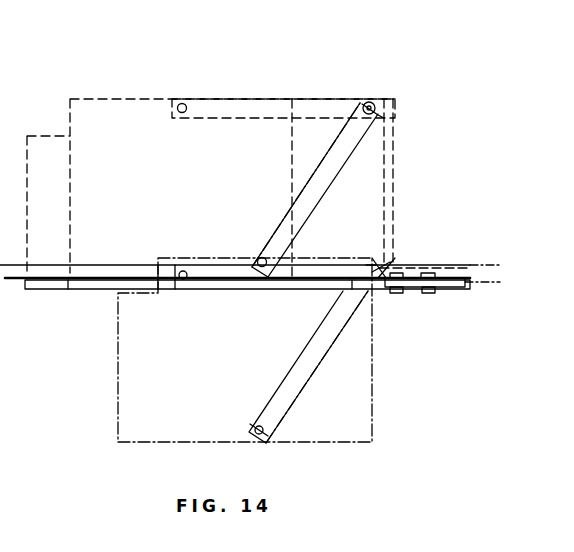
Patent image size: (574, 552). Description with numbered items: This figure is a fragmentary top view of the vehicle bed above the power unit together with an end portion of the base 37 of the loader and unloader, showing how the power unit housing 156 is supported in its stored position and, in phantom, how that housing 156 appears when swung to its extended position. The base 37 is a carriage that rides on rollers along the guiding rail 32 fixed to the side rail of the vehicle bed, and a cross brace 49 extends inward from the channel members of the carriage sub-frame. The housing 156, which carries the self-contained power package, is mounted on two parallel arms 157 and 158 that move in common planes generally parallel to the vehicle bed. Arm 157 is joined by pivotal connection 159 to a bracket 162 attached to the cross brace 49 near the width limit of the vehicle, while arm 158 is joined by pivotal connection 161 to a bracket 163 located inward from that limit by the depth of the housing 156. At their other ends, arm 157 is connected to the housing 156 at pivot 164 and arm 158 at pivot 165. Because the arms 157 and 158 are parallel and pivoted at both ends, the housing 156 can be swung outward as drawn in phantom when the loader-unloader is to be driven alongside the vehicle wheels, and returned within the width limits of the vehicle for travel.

The housing 156 is at (72, 99).
The arm 158 is at (228, 98).
The pivot 165 is at (184, 100).
The pivotal connection 161 is at (368, 101).
The bracket 163 is at (382, 117).
The cross brace 49 is at (395, 180).
The arm 157 is at (197, 290).
The pivot 164 is at (182, 270).
The pivotal connection 159 is at (388, 262).
The bracket 162 is at (397, 268).
The base 37 is at (450, 289).
The guiding rail 32 is at (480, 275).